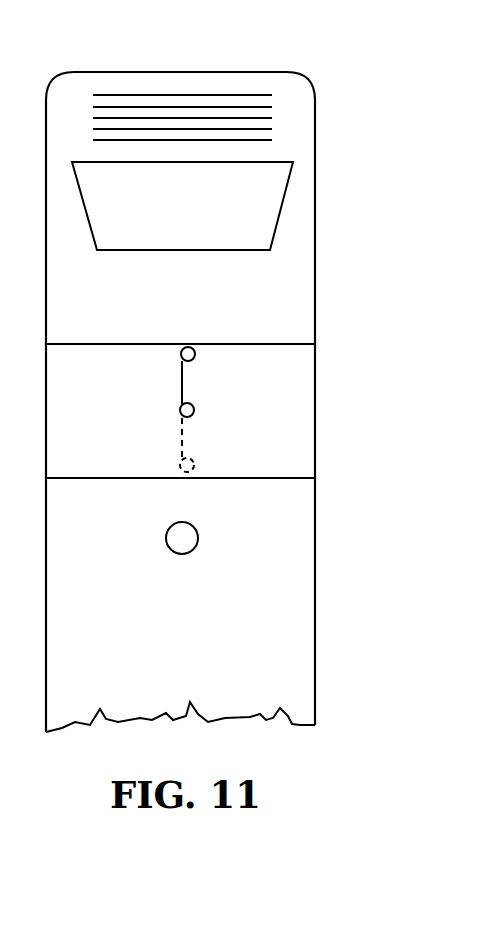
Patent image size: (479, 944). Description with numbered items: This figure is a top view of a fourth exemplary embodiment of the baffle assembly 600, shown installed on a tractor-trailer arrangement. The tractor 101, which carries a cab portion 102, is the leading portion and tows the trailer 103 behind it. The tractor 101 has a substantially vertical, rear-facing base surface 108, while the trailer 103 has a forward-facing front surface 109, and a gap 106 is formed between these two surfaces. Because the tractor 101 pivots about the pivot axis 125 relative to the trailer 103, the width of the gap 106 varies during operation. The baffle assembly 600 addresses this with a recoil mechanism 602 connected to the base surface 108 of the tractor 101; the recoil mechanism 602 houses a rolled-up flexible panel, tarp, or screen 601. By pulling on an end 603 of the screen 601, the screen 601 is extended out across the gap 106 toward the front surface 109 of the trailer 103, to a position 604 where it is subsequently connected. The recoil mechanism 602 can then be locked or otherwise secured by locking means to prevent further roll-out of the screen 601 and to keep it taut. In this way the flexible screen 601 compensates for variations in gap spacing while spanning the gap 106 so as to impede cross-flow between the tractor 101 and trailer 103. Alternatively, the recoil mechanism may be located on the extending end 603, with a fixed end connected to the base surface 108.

The tractor 101 is at (262, 72).
The cab portion 102 is at (195, 286).
The trailer 103 is at (197, 678).
The gap 106 is at (110, 461).
The base surface 108 is at (293, 344).
The front surface 109 is at (297, 478).
The pivot axis 125 is at (198, 543).
The baffle assembly 600 is at (273, 418).
The screen 601 is at (182, 372).
The recoil mechanism 602 is at (192, 348).
The end of the screen 603 is at (194, 408).
The position 604 is at (195, 468).